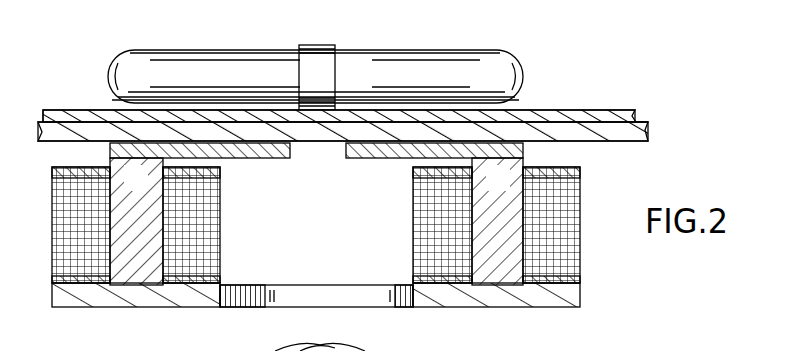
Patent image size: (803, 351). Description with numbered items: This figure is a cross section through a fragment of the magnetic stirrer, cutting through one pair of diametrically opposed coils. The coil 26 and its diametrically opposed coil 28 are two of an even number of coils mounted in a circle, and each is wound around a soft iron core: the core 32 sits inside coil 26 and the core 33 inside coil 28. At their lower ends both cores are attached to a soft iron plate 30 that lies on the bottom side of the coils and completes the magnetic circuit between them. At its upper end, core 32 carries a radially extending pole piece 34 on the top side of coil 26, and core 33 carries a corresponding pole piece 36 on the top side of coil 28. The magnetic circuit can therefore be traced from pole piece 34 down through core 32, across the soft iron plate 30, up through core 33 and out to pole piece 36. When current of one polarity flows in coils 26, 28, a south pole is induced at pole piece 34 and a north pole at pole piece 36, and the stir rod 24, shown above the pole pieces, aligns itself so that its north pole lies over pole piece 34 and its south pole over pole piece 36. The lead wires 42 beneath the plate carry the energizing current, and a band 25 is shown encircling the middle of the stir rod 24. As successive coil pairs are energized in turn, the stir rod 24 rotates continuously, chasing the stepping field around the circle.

The stir rod 24 is at (455, 50).
The clamp band 25 is at (331, 46).
The coil 26 is at (207, 230).
The coil 28 is at (567, 233).
The soft iron plate 30 is at (246, 350).
The soft iron core 32 is at (141, 267).
The soft iron core 33 is at (502, 262).
The pole piece 34 is at (248, 160).
The pole piece 36 is at (383, 160).
The coil 42 is at (320, 347).